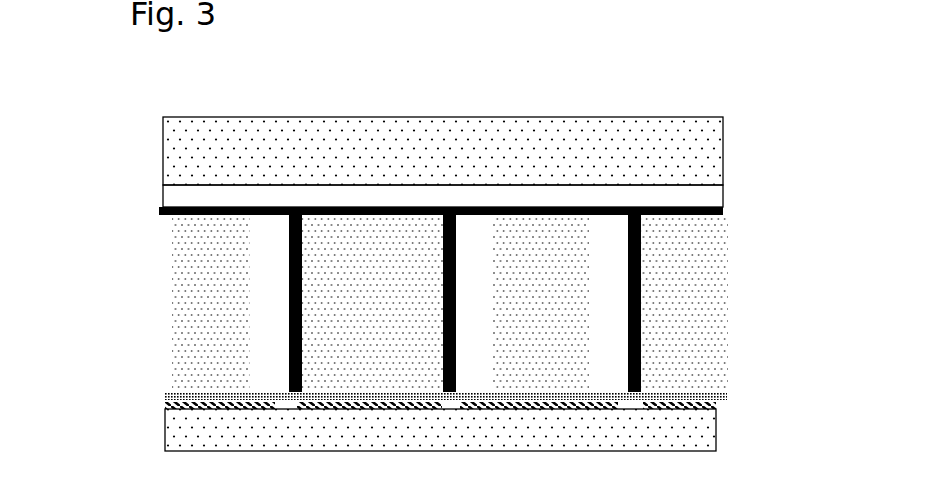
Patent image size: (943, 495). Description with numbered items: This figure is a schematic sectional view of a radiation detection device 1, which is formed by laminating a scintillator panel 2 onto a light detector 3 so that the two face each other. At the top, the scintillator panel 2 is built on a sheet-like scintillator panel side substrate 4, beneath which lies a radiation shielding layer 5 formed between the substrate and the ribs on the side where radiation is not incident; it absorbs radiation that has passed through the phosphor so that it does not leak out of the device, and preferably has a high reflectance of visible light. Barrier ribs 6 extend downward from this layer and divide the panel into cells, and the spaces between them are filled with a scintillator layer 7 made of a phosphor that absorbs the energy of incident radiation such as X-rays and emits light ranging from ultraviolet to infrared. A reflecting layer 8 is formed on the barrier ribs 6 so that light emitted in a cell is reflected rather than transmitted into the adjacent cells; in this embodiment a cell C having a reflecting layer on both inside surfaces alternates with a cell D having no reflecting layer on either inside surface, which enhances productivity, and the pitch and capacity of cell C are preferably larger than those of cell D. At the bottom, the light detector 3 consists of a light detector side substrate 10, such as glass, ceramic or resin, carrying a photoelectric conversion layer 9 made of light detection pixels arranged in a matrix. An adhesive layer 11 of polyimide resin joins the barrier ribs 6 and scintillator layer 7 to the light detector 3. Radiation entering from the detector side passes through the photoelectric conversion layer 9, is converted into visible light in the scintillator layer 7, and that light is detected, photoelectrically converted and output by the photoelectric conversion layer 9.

The radiation detection device 1 is at (105, 122).
The scintillator panel 2 is at (154, 398).
The light detector 3 is at (156, 390).
The scintillator panel side substrate 4 is at (653, 138).
The radiation shielding layer 5 is at (696, 190).
The barrier rib 6 is at (609, 269).
The scintillator layer 7 is at (215, 305).
The reflecting layer 8 is at (639, 319).
The photoelectric conversion layer 9 is at (673, 398).
The light detector side substrate 10 is at (685, 442).
The adhesive layer 11 is at (207, 392).